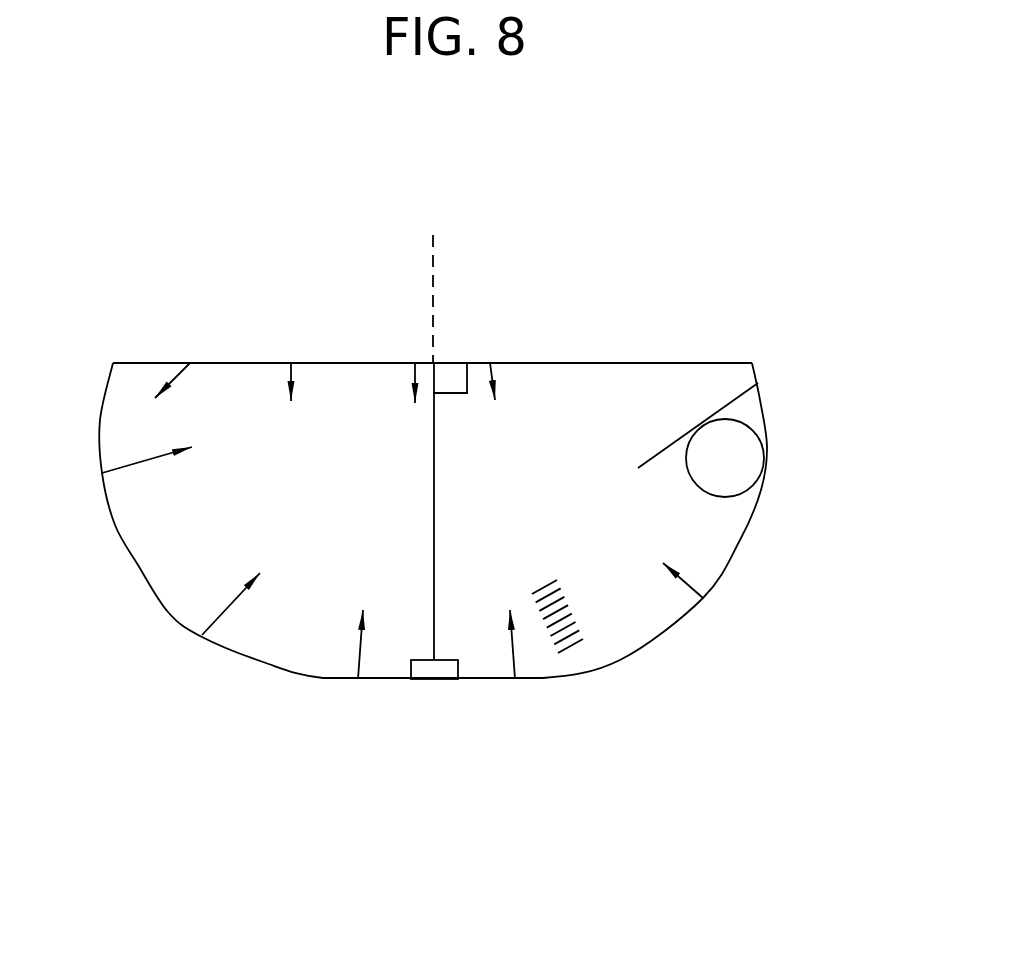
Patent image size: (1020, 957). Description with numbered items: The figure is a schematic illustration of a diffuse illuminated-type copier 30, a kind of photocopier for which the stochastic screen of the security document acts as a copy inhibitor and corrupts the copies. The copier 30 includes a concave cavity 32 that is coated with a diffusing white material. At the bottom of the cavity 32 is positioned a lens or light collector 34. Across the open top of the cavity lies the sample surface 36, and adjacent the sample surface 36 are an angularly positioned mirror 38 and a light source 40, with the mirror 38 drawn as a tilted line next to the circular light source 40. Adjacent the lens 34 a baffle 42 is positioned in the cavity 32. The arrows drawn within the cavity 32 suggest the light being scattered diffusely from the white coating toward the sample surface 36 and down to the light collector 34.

The diffuse illuminated-type copier 30 is at (230, 283).
The concave cavity 32 is at (168, 612).
The lens or light collector 34 is at (446, 690).
The sample surface 36 is at (695, 353).
The mirror 38 is at (657, 443).
The light source 40 is at (742, 458).
The baffle 42 is at (590, 630).